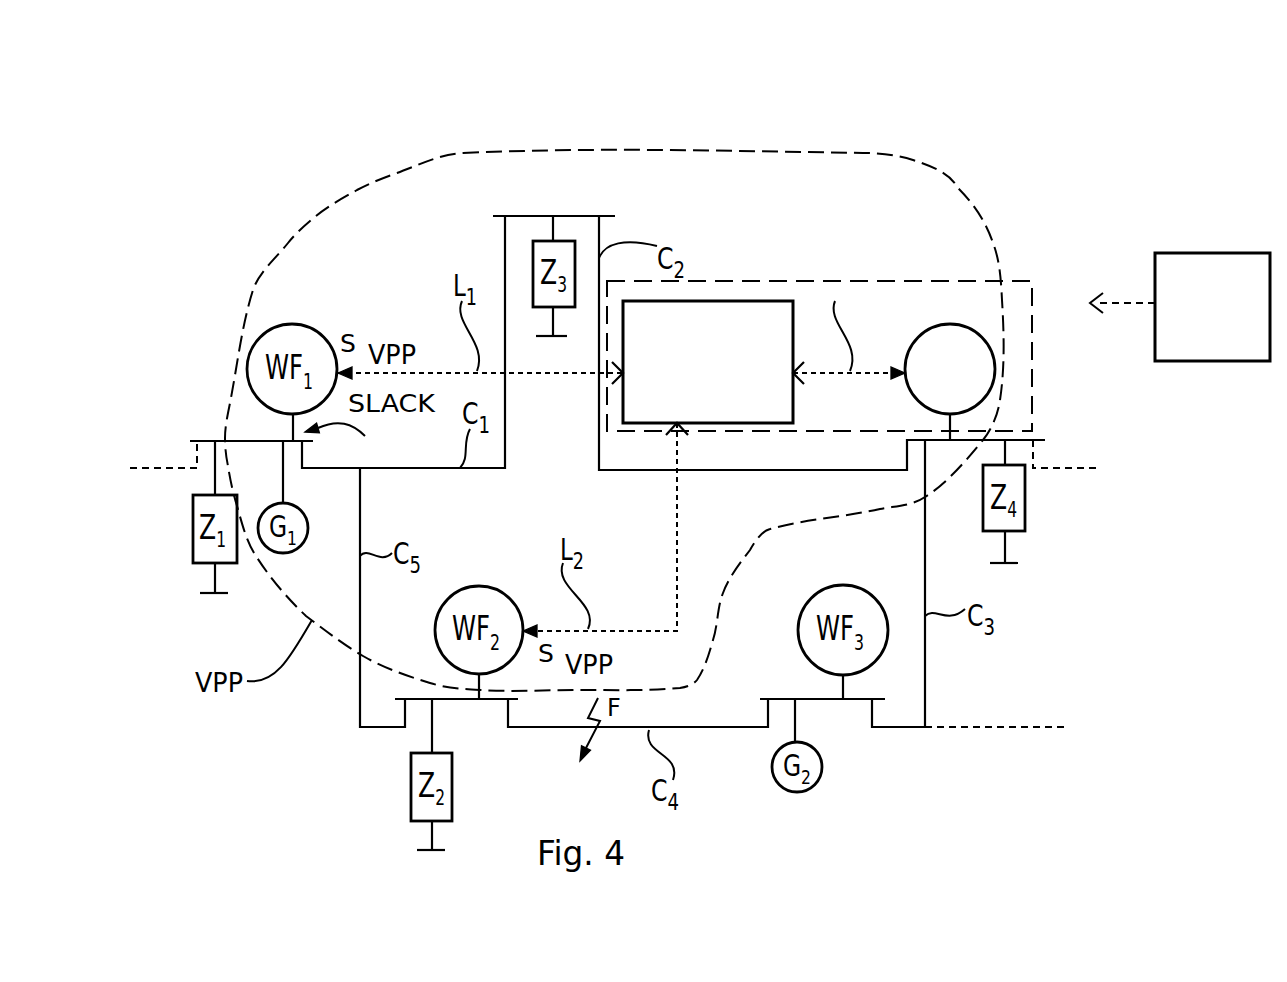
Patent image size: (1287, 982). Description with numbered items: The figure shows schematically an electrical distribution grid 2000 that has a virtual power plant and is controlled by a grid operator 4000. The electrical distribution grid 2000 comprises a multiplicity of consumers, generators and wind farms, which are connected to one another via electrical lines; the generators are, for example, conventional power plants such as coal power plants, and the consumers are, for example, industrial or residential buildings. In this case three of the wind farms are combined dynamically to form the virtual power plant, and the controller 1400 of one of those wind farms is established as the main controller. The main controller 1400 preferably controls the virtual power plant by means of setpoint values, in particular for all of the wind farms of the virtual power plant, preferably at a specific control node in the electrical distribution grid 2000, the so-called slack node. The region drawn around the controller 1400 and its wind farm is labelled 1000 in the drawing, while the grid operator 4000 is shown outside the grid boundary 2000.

The virtual power plant sub-system with controller and wind farm WF4 1000 is at (998, 313).
The controller 1400 is at (763, 298).
The electrical distribution grid 2000 is at (1008, 173).
The grid operator 4000 is at (1248, 321).